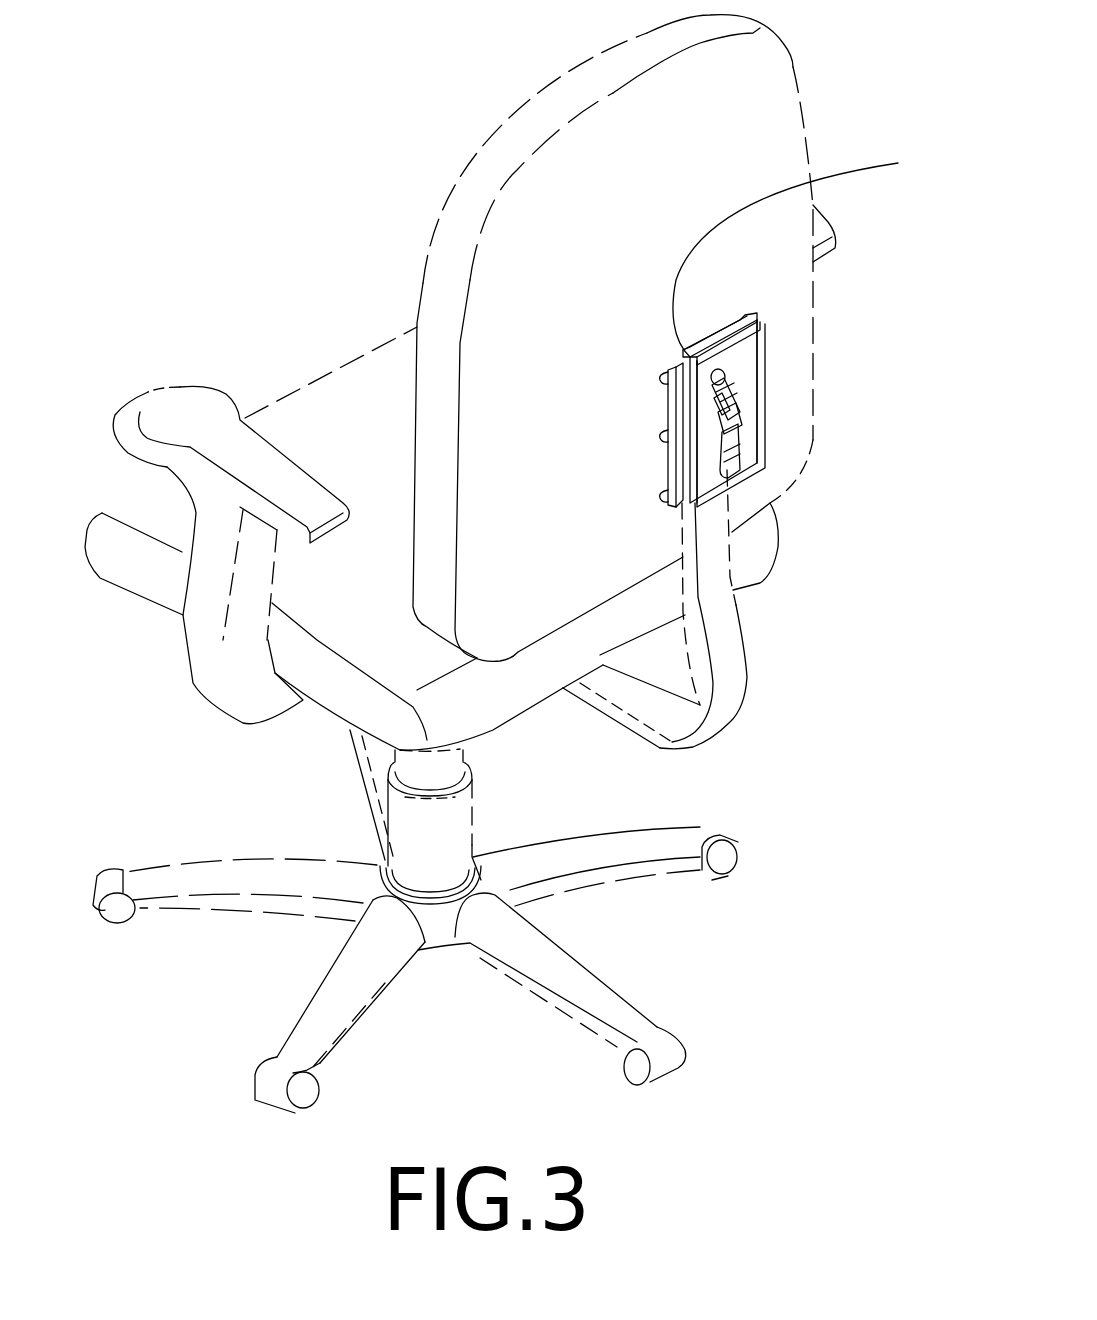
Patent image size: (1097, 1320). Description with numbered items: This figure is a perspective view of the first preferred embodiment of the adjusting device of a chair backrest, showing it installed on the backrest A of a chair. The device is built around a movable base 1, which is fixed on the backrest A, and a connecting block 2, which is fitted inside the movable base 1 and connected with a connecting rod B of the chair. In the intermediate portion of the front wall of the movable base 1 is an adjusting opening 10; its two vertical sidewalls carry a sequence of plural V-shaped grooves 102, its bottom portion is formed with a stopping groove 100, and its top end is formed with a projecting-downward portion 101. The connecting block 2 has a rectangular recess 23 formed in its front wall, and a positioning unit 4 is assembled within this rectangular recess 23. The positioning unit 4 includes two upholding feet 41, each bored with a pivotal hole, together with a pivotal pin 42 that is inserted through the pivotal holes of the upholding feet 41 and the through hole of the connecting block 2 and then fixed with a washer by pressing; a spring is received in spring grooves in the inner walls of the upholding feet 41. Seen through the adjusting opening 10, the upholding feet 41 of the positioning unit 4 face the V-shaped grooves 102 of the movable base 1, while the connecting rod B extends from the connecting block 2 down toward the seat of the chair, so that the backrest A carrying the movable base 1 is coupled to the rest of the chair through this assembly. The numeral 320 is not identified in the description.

The backrest A is at (767, 117).
The connecting rod B is at (722, 655).
The back shell 320 is at (814, 253).
The connecting block 2 is at (742, 316).
The projecting-downward portion 101 is at (740, 347).
The movable base 1 is at (752, 370).
The positioning unit 4 is at (744, 387).
The V-shaped grooves 102 is at (757, 398).
The pivotal pin 42 is at (748, 424).
The adjusting opening 10 is at (750, 447).
The stopping groove 100 is at (752, 488).
The upholding feet 41 is at (666, 435).
The rectangular recess 23 is at (712, 450).